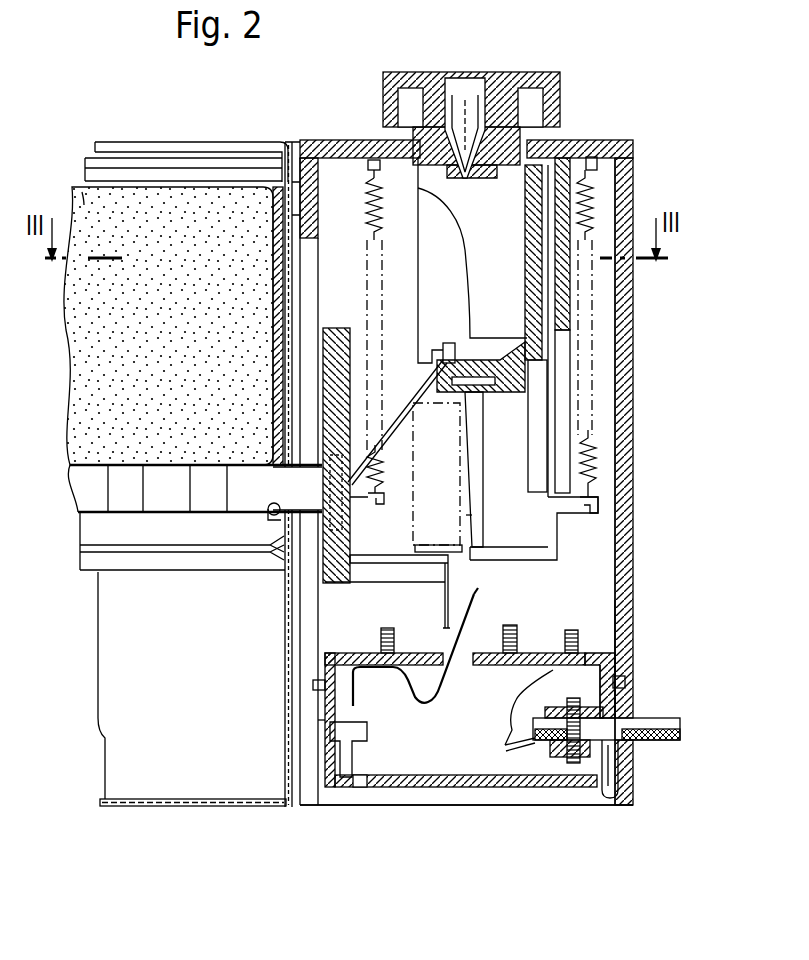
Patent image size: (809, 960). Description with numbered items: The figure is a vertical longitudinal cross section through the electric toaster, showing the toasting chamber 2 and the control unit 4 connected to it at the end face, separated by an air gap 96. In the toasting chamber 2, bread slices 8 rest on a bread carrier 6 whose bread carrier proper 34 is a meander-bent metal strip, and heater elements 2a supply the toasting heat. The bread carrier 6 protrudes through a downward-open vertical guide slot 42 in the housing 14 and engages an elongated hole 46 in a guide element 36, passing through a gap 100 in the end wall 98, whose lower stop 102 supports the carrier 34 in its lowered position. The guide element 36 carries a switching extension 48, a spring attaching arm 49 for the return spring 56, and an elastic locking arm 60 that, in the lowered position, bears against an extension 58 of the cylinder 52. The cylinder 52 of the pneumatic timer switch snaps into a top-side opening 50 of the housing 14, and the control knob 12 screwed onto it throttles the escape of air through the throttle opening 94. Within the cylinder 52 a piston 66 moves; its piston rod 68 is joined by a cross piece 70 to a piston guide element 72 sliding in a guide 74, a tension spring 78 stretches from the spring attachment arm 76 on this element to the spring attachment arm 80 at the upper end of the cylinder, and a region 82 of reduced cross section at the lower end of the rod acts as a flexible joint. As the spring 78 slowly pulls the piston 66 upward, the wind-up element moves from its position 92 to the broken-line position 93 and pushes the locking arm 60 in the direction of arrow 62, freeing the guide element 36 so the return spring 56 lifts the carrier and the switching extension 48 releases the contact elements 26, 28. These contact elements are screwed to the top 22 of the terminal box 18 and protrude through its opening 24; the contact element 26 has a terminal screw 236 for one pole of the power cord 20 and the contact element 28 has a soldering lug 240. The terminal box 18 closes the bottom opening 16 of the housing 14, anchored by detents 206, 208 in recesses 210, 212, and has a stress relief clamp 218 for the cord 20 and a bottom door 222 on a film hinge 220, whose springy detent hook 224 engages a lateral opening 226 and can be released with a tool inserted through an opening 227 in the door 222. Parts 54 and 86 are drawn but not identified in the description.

The toasting chamber 2 is at (113, 157).
The heater elements 2a is at (172, 152).
The control unit 4 is at (628, 358).
The bread carrier 6 is at (106, 522).
The bread slices 8 is at (82, 192).
The control knob 12 is at (562, 90).
The housing 14 is at (625, 400).
The opening 16 is at (490, 795).
The terminal box 18 is at (620, 640).
The power cord 20 is at (655, 745).
The top of terminal box 22 is at (540, 652).
The opening 24 is at (462, 668).
The contact element 26 is at (478, 606).
The contact element 28 is at (479, 592).
The bread carrier proper 34 is at (178, 510).
The guide element 36 is at (337, 328).
The vertical guide slot 42 is at (308, 592).
The elongated hole 46 is at (330, 498).
The switching extension 48 is at (440, 592).
The spring attaching arm 49 is at (370, 505).
The top-side opening 50 is at (390, 142).
The cylinder 52 is at (447, 241).
The spring mount 54 is at (368, 176).
The return spring 56 is at (366, 220).
The extension 58 is at (448, 342).
The locking arm 60 is at (383, 455).
The arrow 62 is at (398, 378).
The piston 66 is at (498, 393).
The piston rod 68 is at (480, 450).
The cross piece 70 is at (505, 548).
The piston guide element 72 is at (600, 468).
The guide 74 is at (545, 293).
The spring attachment arm 76 is at (595, 515).
The tension spring 78 is at (598, 438).
The spring attachment arm 80 is at (600, 163).
The region of reduced cross sectional area 82 is at (478, 517).
The support bar 86 is at (360, 585).
The position 92 is at (440, 545).
The position 93 is at (435, 408).
The throttle opening 94 is at (480, 180).
The air gap 96 is at (295, 807).
The end wall 98 is at (265, 150).
The gap 100 is at (280, 270).
The stop 102 is at (270, 508).
The detent 206 is at (312, 682).
The detent 208 is at (630, 685).
The recess 210 is at (312, 676).
The recess 212 is at (620, 668).
The stress relief clamp 218 is at (560, 762).
The film hinge 220 is at (612, 800).
The bottom door 222 is at (445, 790).
The springy detent hook 224 is at (350, 752).
The lateral opening 226 is at (322, 722).
The opening 227 is at (365, 788).
The terminal screw 236 is at (575, 640).
The soldering lug 240 is at (362, 690).